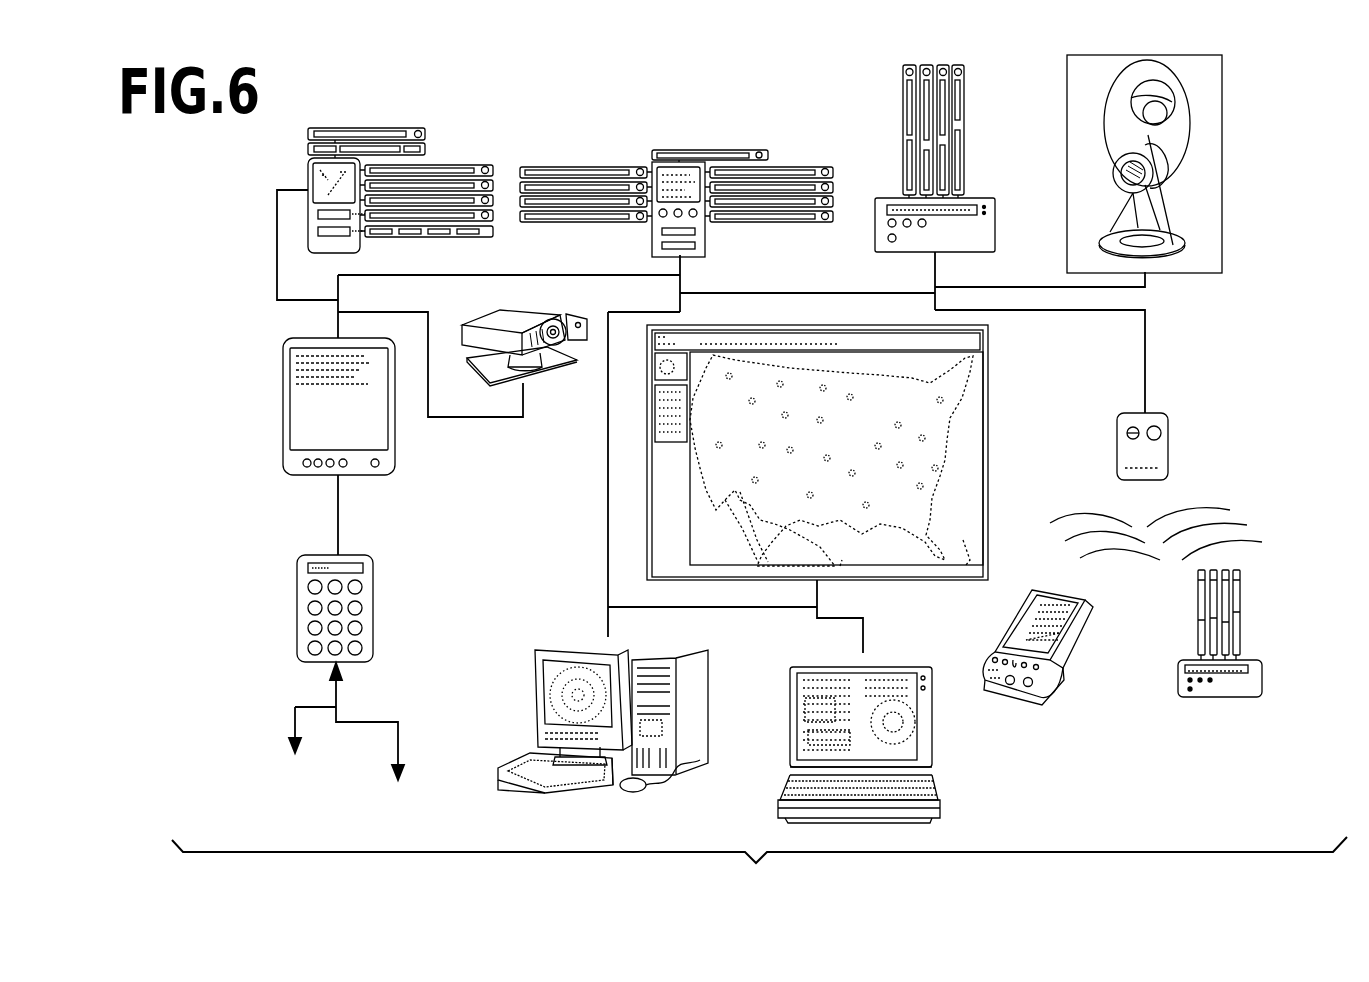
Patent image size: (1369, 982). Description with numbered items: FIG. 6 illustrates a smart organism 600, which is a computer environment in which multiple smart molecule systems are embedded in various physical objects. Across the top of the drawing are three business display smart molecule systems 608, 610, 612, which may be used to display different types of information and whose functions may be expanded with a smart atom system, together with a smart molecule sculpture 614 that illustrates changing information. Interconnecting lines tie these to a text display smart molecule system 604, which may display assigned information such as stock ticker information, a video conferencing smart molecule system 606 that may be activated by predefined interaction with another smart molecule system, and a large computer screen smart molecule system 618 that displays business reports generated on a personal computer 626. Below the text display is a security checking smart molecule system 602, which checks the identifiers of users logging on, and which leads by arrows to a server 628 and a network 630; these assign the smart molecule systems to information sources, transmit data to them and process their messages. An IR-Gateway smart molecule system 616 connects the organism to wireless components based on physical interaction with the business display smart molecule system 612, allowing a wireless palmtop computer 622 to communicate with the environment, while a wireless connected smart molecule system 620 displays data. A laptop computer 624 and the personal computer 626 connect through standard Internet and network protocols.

The smart organism 600 is at (759, 867).
The security checking smart molecule system 602 is at (368, 565).
The text display smart molecule system 604 is at (380, 433).
The video conferencing smart molecule system 606 is at (543, 367).
The business display smart molecule system 608 is at (430, 158).
The business display smart molecule system 610 is at (618, 160).
The business display smart molecule system 612 is at (900, 157).
The smart molecule sculpture 614 is at (1193, 147).
The IR-Gateway smart molecule system 616 is at (1160, 450).
The large computer screen smart molecule system 618 is at (988, 407).
The wireless connected smart molecule system 620 is at (1245, 628).
The wireless palmtop computer 622 is at (1060, 648).
The laptop computer 624 is at (932, 767).
The personal computer 626 is at (680, 767).
The server 628 is at (280, 817).
The network 630 is at (402, 815).